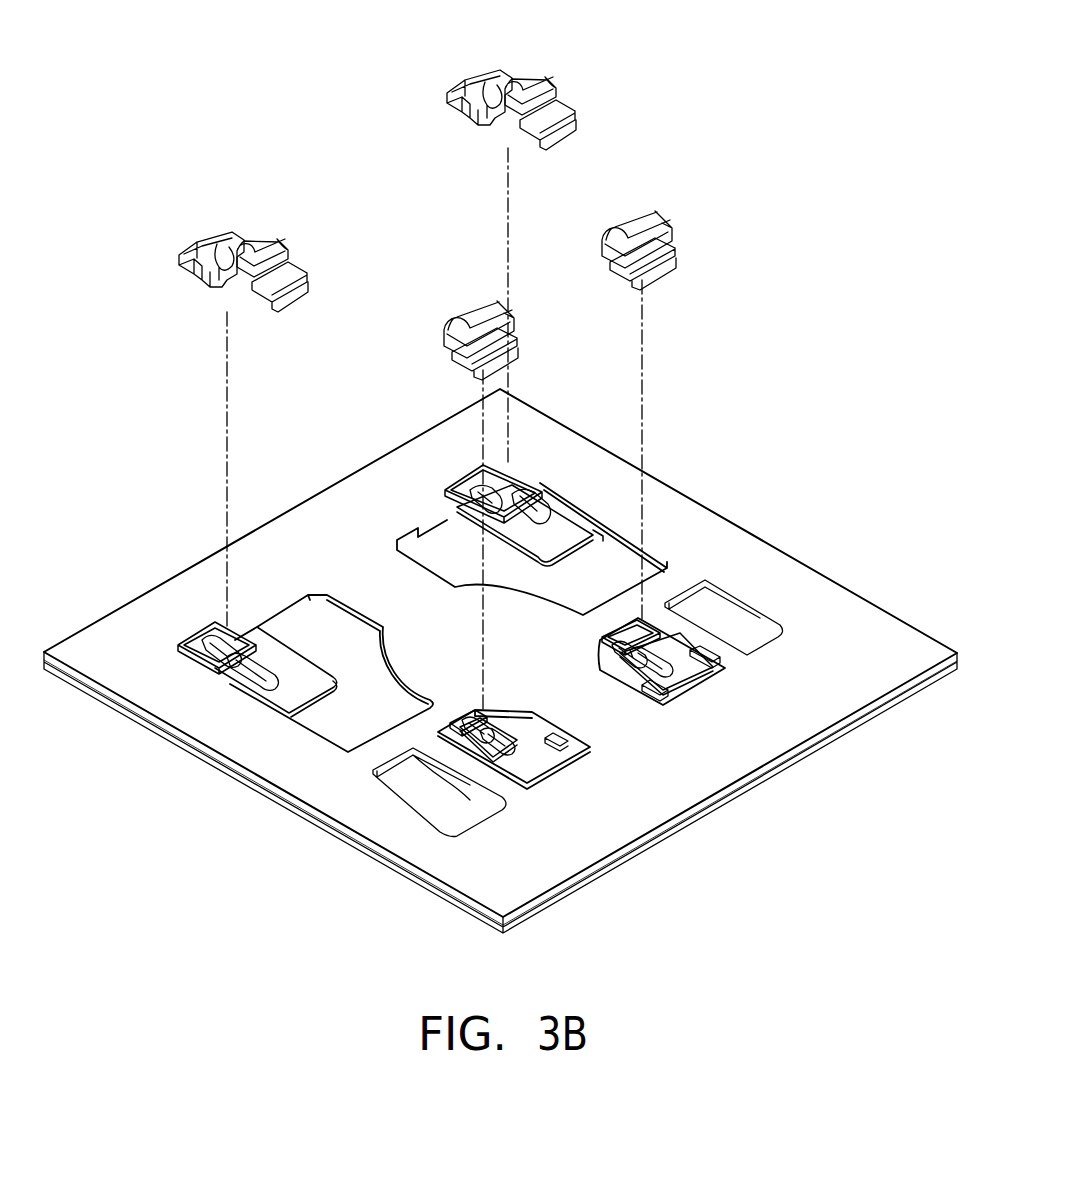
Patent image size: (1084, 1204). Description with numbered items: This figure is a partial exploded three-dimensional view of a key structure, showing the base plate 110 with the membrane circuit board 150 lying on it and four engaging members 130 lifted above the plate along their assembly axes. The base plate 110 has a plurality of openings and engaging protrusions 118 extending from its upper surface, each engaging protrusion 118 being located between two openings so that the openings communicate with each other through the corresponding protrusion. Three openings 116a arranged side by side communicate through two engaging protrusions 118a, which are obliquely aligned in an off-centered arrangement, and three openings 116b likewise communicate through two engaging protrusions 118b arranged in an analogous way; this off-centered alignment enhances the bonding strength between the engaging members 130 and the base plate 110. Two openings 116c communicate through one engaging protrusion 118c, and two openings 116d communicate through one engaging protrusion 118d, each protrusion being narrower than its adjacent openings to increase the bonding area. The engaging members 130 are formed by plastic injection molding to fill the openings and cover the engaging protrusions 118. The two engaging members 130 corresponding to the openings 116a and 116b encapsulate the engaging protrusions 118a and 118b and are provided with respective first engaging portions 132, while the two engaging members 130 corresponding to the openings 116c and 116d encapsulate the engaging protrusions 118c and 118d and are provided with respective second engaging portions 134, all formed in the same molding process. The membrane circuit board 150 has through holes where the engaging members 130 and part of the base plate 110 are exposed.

The base plate 110 is at (845, 728).
The membrane circuit board 150 is at (845, 616).
The openings 116a is at (492, 502).
The openings 116b is at (258, 665).
The openings 116c is at (612, 660).
The openings 116d is at (480, 740).
The engaging protrusions 118 is at (140, 797).
The engaging protrusions 118a is at (545, 490).
The engaging protrusions 118b is at (213, 663).
The engaging protrusion 118c is at (648, 620).
The engaging protrusion 118d is at (431, 733).
The engaging members 130 is at (523, 80).
The first engaging portions 132 is at (490, 66).
The second engaging portions 134 is at (667, 262).